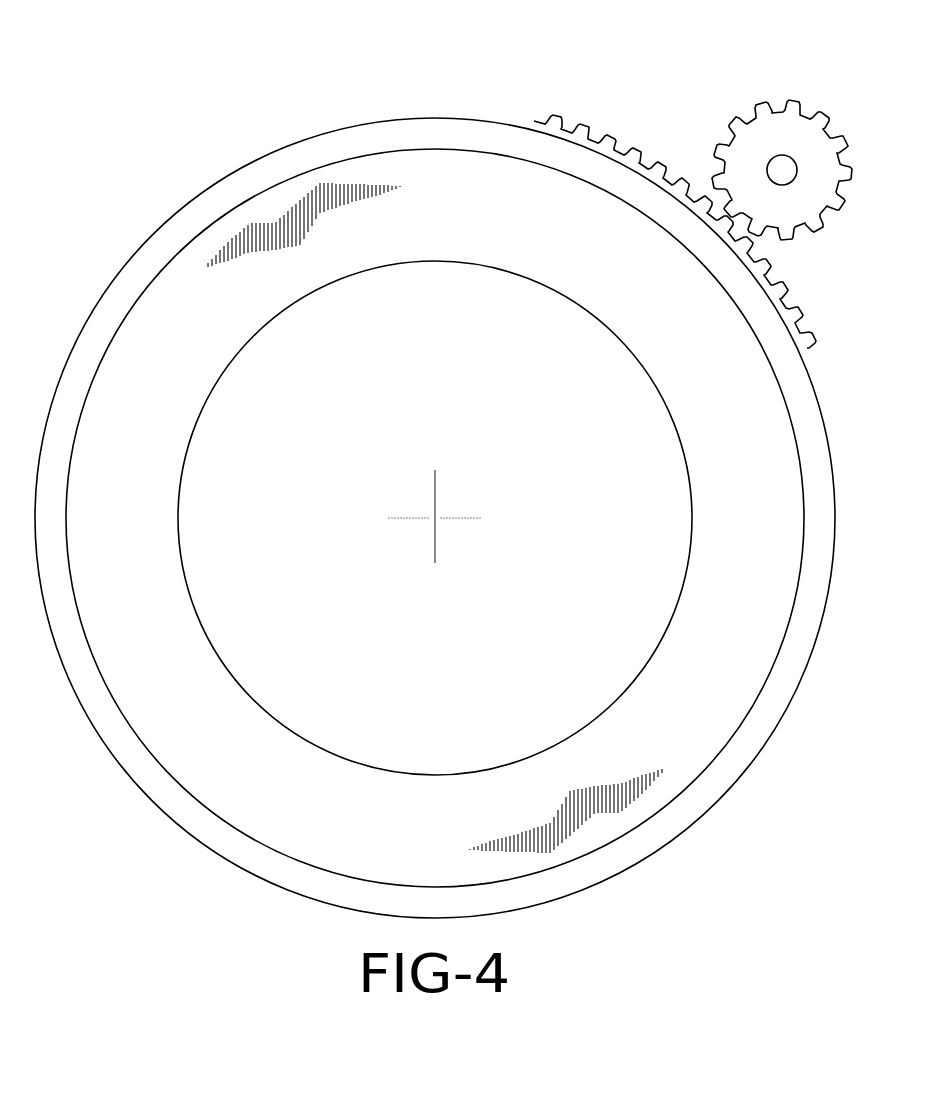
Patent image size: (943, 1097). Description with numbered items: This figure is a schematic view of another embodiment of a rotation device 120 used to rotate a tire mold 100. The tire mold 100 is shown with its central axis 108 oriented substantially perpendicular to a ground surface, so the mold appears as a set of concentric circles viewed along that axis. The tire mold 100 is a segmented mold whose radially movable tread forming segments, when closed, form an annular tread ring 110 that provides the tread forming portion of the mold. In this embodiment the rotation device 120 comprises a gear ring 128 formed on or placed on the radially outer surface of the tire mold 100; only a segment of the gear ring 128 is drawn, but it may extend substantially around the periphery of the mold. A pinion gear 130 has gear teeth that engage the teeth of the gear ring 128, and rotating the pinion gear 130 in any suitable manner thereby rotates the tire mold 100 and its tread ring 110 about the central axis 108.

The tire mold 100 is at (216, 120).
The tread ring 110 is at (413, 135).
The central axis 108 is at (435, 518).
The gear ring 128 is at (565, 110).
The rotation device 120 is at (689, 183).
The pinion gear 130 is at (795, 122).